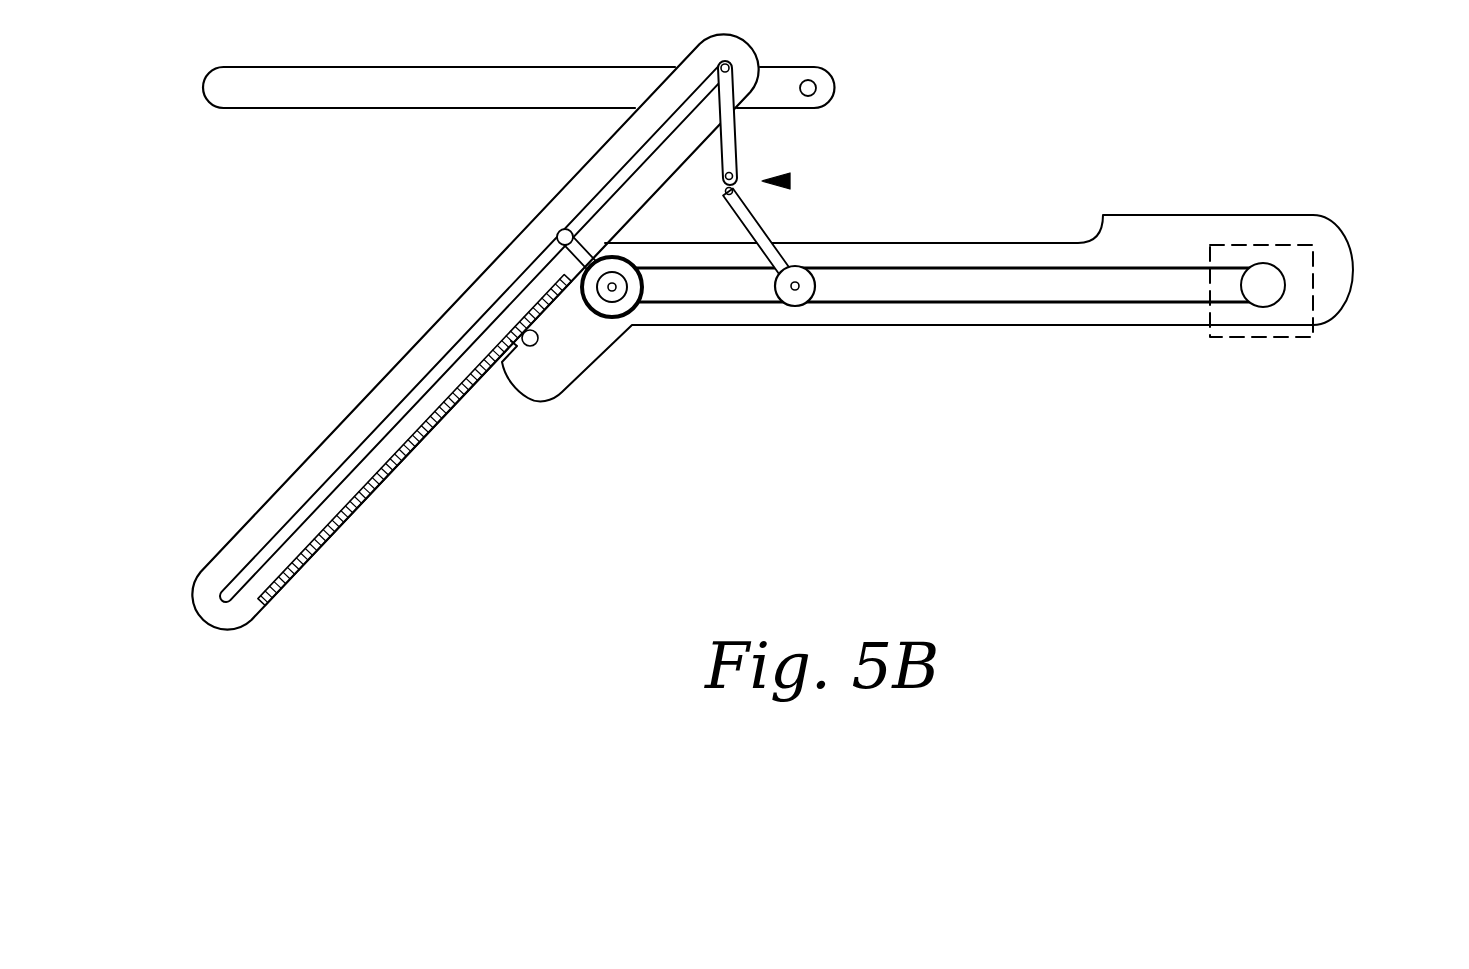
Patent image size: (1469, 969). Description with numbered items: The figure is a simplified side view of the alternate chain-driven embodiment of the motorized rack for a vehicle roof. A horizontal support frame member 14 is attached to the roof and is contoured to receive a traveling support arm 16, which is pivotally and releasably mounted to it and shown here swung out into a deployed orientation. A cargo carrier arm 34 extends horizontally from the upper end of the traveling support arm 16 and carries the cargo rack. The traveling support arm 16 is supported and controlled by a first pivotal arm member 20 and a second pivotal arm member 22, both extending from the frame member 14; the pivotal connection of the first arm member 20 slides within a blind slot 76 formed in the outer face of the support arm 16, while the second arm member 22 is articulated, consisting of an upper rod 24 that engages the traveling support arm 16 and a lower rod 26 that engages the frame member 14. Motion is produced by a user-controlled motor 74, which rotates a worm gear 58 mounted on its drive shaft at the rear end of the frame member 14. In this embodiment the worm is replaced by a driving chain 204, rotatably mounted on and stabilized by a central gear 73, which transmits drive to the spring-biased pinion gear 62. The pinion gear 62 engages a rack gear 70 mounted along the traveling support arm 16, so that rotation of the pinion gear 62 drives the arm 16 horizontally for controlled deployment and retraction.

The horizontal support frame member 14 is at (1163, 214).
The traveling support arm 16 is at (410, 338).
The first pivotal arm member 20 is at (587, 245).
The second pivotal arm member 22 is at (788, 181).
The upper rod 24 is at (740, 133).
The lower rod 26 is at (768, 220).
The cargo carrier arm 34 is at (207, 105).
The worm gear 58 is at (1264, 308).
The pinion gear 62 is at (604, 318).
The rack gear 70 is at (296, 577).
The central gear 73 is at (800, 306).
The motor 74 is at (1297, 338).
The blind slot 76 is at (380, 422).
The driving chain 204 is at (985, 306).